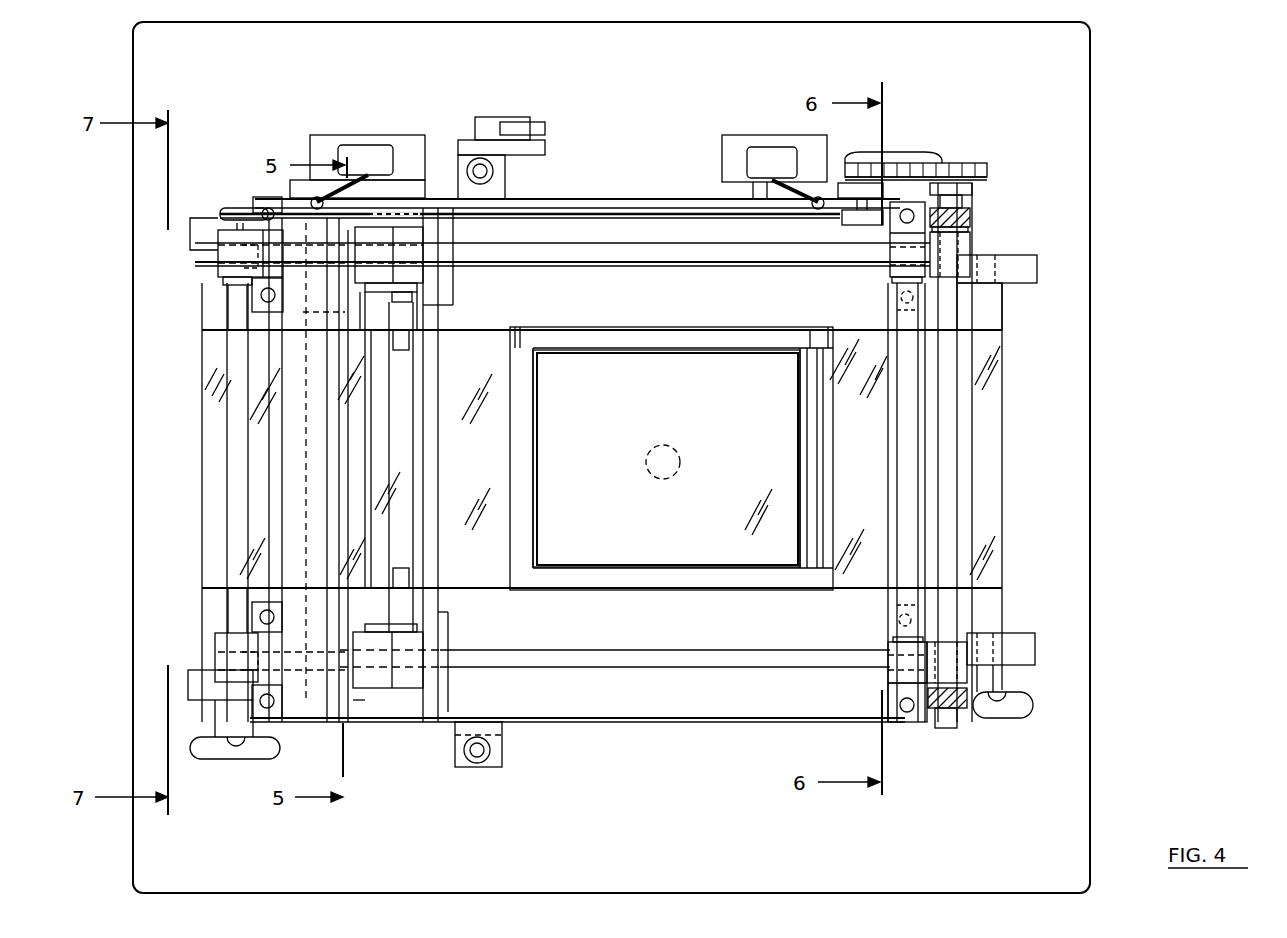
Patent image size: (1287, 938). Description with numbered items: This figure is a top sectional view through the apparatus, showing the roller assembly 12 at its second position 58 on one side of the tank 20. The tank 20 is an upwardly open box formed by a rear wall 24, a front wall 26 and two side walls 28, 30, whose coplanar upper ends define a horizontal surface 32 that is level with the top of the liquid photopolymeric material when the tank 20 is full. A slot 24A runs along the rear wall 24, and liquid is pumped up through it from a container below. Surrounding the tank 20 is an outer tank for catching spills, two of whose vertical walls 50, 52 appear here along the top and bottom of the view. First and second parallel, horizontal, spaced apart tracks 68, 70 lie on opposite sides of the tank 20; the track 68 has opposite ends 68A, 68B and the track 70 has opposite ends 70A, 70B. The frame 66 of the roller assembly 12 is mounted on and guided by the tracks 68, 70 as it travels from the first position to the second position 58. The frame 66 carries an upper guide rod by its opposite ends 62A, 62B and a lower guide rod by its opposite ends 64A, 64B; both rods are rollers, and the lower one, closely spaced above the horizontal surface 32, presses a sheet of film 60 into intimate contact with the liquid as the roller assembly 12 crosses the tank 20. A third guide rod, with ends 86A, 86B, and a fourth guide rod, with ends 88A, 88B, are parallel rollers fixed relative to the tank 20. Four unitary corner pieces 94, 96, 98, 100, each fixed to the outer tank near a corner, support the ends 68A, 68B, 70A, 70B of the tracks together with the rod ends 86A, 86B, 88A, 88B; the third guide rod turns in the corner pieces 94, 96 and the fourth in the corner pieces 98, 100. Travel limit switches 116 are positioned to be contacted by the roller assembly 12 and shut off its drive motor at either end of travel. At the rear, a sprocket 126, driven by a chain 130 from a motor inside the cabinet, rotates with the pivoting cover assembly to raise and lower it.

The roller assembly 12 is at (383, 232).
The tank 20 is at (692, 322).
The rear wall 24 is at (834, 424).
The slot 24A is at (813, 345).
The front wall 26 is at (520, 448).
The side wall 28 is at (628, 330).
The side wall 30 is at (678, 590).
The horizontal surface 32 is at (575, 335).
The vertical wall 50 is at (665, 207).
The vertical wall 52 is at (718, 695).
The second position 58 is at (398, 210).
The sheet of film 60 is at (474, 330).
The end of upper guide rod 62A is at (412, 297).
The end of upper guide rod 62B is at (410, 628).
The end of lower guide rod 64A is at (395, 298).
The end of lower guide rod 64B is at (380, 590).
The frame 66 is at (397, 688).
The first track 68 is at (630, 252).
The end of first track 68A is at (890, 275).
The end of first track 68B is at (243, 252).
The second track 70 is at (650, 660).
The end of second track 70A is at (888, 686).
The end of second track 70B is at (240, 652).
The end of third guide rod 86A is at (238, 288).
The end of third guide rod 86B is at (237, 632).
The end of fourth guide rod 88A is at (912, 300).
The end of fourth guide rod 88B is at (897, 633).
The corner piece 94 is at (238, 262).
The corner piece 96 is at (215, 678).
The corner piece 98 is at (900, 242).
The corner piece 100 is at (905, 700).
The travel limit switches 116 is at (378, 158).
The sprocket 126 is at (945, 160).
The chain 130 is at (987, 178).